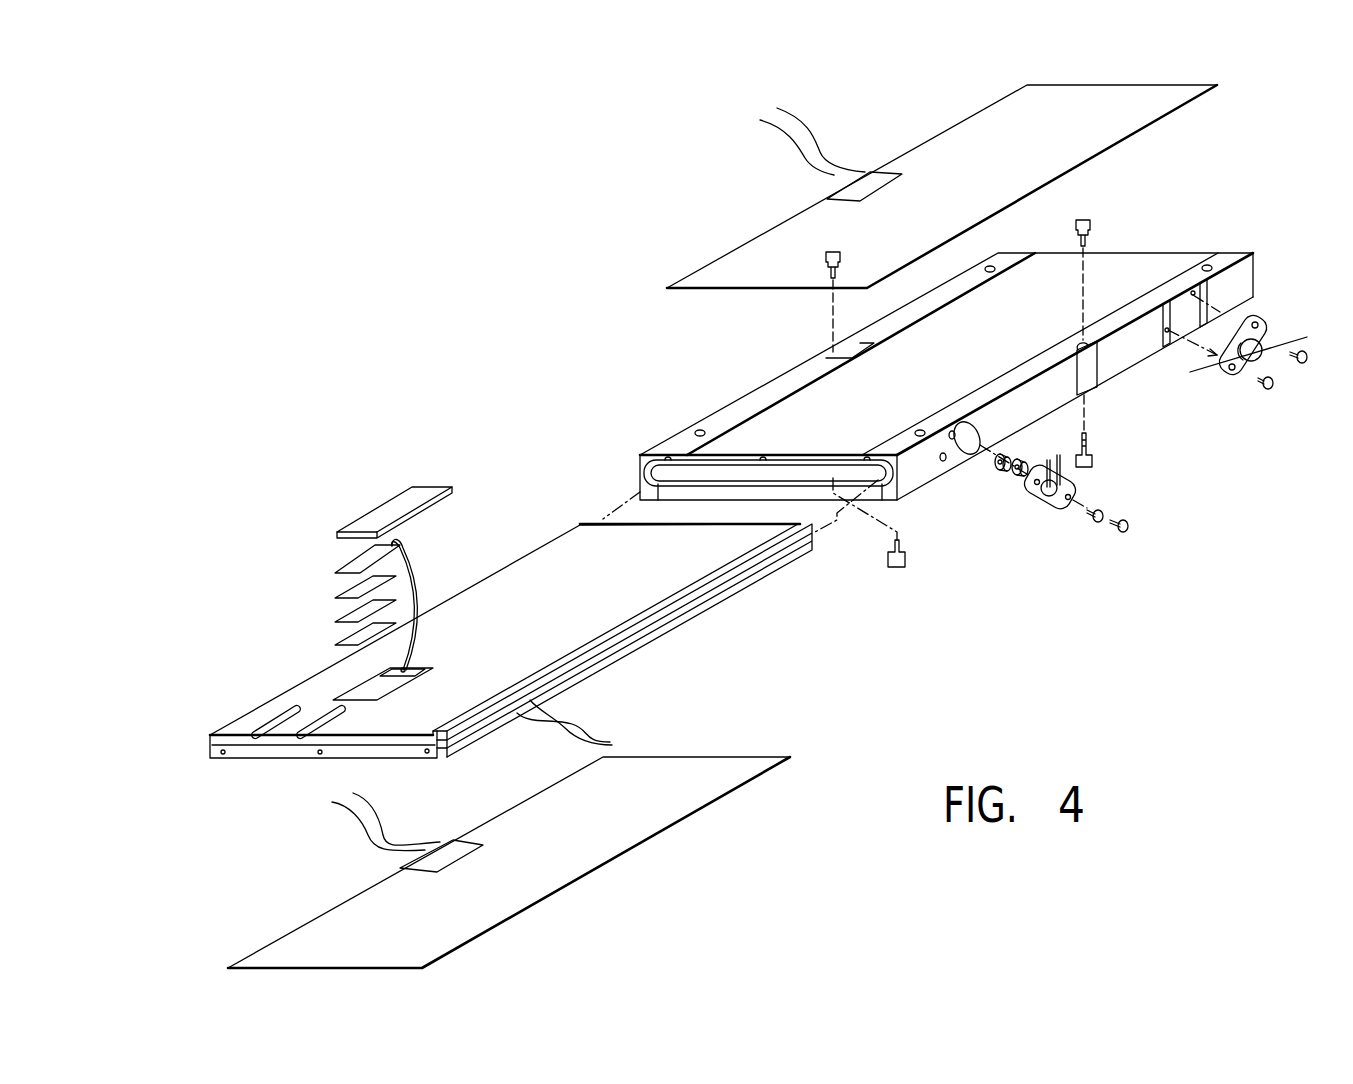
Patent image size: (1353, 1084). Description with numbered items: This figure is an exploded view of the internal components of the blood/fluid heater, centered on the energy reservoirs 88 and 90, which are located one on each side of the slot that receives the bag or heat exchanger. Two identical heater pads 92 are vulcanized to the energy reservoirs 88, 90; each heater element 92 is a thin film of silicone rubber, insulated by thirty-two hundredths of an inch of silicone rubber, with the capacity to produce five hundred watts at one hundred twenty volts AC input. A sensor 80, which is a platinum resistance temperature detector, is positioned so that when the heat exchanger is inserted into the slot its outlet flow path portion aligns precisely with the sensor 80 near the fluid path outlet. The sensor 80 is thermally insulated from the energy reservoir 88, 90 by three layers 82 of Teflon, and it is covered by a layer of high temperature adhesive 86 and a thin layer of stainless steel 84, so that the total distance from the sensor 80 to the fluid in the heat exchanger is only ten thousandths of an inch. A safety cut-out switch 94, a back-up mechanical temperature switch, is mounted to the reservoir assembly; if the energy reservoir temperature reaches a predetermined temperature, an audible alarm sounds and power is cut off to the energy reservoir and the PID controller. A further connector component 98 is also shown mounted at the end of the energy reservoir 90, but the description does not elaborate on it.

The sensor 80 is at (337, 575).
The layers of Teflon 82 is at (338, 643).
The thin layer of stainless steel 84 is at (410, 487).
The layer of high temperature adhesive 86 is at (458, 490).
The energy reservoir 88 is at (220, 760).
The energy reservoir 90 is at (661, 448).
The heater pad 92 is at (696, 281).
The safety cut-out switch 94 is at (1053, 502).
The connector 98 is at (1262, 322).